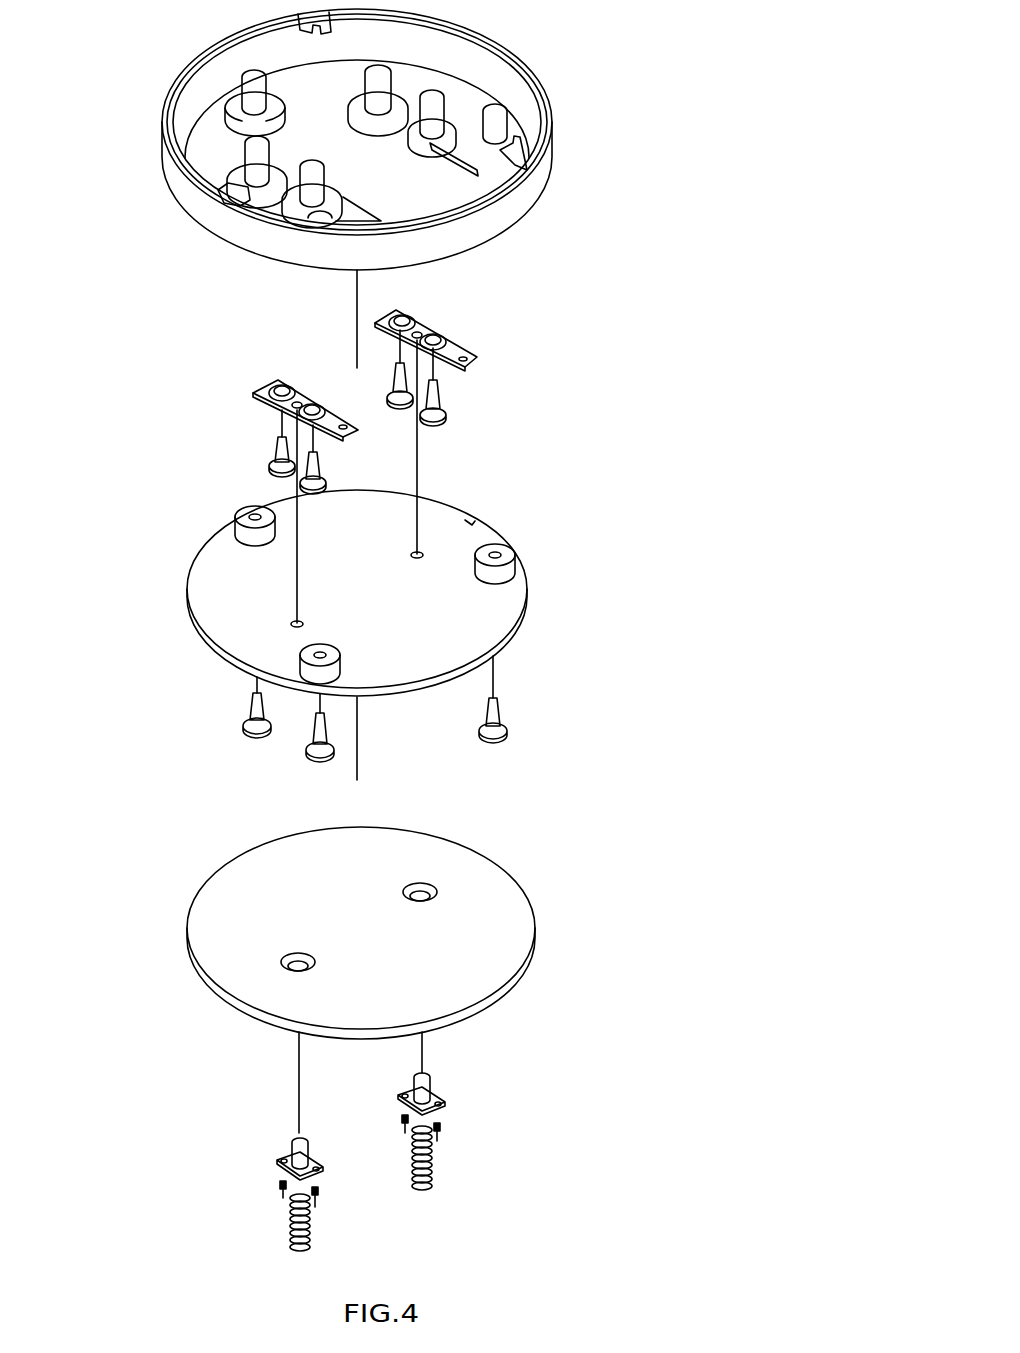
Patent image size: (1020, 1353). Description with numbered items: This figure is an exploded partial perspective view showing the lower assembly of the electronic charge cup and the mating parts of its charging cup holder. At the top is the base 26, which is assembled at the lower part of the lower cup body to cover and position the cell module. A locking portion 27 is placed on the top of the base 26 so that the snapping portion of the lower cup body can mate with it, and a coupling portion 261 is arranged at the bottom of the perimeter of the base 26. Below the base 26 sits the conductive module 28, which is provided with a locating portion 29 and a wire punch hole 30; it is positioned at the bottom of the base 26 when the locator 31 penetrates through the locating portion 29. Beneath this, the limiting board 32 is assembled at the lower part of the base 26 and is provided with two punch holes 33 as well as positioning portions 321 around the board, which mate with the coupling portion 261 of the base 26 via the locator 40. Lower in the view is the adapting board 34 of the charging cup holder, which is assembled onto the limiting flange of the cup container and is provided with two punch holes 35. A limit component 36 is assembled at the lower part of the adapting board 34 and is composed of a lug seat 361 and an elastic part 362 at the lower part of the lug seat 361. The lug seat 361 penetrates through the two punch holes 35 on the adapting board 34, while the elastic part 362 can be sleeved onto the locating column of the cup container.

The base 26 is at (515, 207).
The locking portion 27 is at (298, 12).
The coupling portion 261 is at (225, 87).
The conductive module 28 is at (257, 398).
The locating portion 29 is at (405, 320).
The wire punch hole 30 is at (466, 363).
The locator 31 is at (300, 485).
The limiting board 32 is at (527, 603).
The positioning portion 321 is at (300, 652).
The punch hole 33 is at (303, 625).
The locator 40 is at (308, 753).
The adapting board 34 is at (532, 955).
The punch hole 35 is at (317, 966).
The limit component 36 is at (428, 1162).
The lug seat 361 is at (434, 1085).
The elastic part 362 is at (433, 1157).